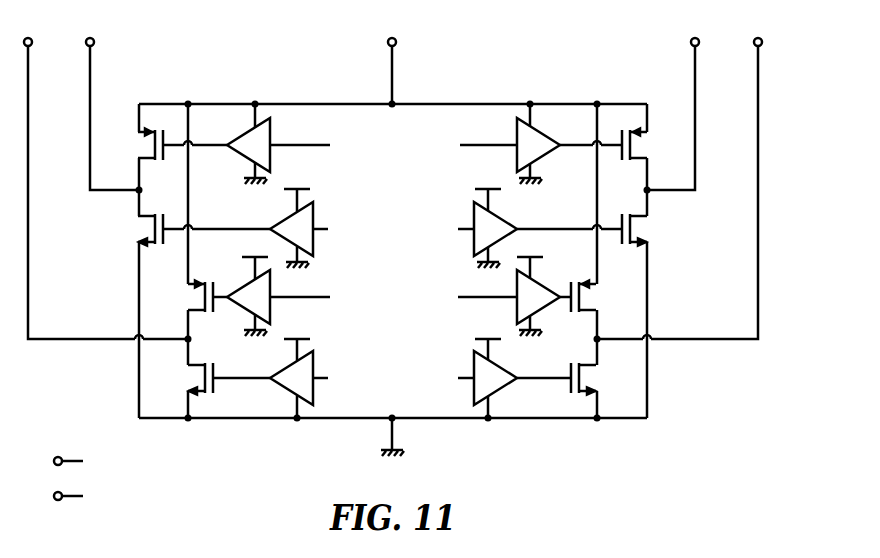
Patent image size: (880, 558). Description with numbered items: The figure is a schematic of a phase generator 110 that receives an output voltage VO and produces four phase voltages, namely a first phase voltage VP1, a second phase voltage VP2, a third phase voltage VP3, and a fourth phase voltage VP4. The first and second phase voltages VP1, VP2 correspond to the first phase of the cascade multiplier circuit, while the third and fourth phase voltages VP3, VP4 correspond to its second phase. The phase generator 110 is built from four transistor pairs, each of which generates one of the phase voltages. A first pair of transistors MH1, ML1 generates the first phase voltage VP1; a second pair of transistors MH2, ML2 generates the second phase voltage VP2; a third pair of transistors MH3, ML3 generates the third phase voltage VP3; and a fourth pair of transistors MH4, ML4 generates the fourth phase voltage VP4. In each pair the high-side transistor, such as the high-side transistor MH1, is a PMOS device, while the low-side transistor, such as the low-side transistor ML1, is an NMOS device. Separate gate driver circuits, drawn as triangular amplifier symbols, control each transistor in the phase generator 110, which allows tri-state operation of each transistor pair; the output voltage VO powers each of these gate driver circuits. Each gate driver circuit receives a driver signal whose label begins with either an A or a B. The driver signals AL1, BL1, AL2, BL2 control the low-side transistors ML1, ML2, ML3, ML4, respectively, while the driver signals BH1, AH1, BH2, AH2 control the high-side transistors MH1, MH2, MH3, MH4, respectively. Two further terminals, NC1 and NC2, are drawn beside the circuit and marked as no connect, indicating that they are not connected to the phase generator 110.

The phase generator 110 is at (189, 83).
The high-side transistor MH1 is at (185, 297).
The high-side transistor MH2 is at (135, 145).
The high-side transistor MH3 is at (651, 145).
The high-side transistor MH4 is at (601, 297).
The low-side transistor ML1 is at (186, 379).
The low-side transistor ML2 is at (136, 230).
The low-side transistor ML3 is at (650, 230).
The low-side transistor ML4 is at (600, 379).
The driver signal AH1 is at (293, 144).
The driver signal BL1 is at (313, 220).
The driver signal BH1 is at (293, 288).
The driver signal AL1 is at (312, 370).
The driver signal BH2 is at (494, 144).
The driver signal AL2 is at (473, 220).
The driver signal AH2 is at (493, 288).
The driver signal BL2 is at (474, 370).
The first phase voltage VP1 is at (102, 179).
The second phase voltage VP2 is at (108, 104).
The third phase voltage VP3 is at (677, 104).
The fourth phase voltage VP4 is at (683, 179).
The output voltage VO is at (392, 61).
The no-connect pin NC1 is at (89, 461).
The no-connect pin NC2 is at (89, 496).